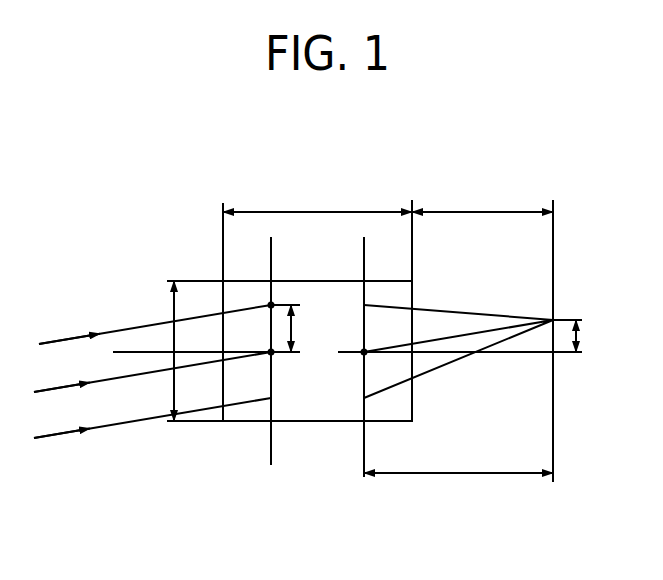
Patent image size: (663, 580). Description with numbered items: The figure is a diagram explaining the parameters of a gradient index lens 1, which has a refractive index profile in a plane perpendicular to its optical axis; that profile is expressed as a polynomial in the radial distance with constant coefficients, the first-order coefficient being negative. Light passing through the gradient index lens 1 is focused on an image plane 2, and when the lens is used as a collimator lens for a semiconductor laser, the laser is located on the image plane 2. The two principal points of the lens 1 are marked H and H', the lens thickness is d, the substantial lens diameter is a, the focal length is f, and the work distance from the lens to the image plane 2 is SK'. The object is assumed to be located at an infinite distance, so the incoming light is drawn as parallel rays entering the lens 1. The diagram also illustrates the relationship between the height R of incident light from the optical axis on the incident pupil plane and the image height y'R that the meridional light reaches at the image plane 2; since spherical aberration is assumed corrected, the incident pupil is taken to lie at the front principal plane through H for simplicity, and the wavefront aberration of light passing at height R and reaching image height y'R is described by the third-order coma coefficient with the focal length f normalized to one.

The gradient index lens 1 is at (327, 281).
The image plane 2 is at (553, 297).
The principal point H is at (282, 351).
The principal point H' is at (352, 357).
The lens thickness d is at (317, 197).
The work distance SK' is at (482, 197).
The substantial lens diameter a is at (160, 351).
The height of incident light R is at (292, 327).
The image height y'R is at (586, 337).
The focal length f is at (458, 460).